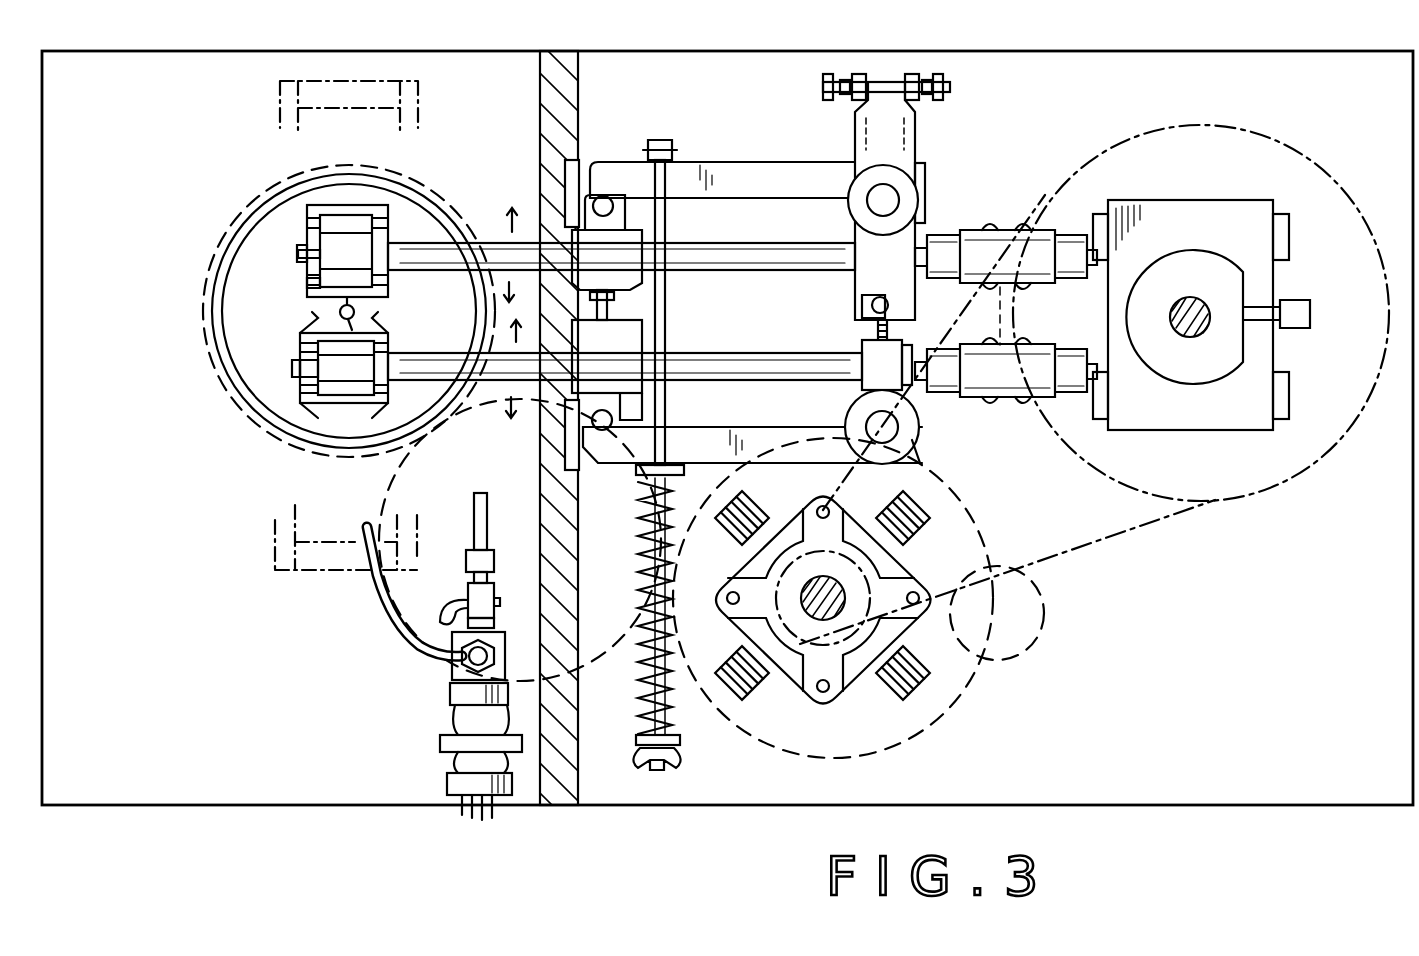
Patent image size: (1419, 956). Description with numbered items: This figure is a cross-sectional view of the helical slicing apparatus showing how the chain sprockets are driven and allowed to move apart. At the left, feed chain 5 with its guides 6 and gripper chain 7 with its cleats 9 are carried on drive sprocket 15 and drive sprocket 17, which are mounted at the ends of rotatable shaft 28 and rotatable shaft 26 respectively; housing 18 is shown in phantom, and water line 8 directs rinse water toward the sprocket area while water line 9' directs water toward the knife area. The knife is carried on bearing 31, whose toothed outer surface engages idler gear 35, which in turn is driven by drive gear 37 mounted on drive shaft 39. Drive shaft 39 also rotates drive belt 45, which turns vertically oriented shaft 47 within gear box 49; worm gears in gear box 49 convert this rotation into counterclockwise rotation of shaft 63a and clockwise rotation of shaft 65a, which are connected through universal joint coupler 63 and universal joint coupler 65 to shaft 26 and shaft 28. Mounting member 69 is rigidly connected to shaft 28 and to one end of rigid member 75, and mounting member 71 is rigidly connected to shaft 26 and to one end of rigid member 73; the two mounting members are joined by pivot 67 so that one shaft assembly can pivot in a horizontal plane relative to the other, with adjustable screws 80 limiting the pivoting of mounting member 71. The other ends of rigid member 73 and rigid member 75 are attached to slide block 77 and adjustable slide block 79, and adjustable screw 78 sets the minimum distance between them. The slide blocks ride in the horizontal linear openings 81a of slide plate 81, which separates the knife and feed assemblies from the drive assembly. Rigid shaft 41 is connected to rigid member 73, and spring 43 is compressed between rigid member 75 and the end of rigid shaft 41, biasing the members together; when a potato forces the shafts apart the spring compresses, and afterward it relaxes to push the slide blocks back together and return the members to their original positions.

The feed chain 5 is at (300, 343).
The guides 6 is at (382, 324).
The gripper chain 7 is at (305, 284).
The water line 8 is at (382, 605).
The cleats 9 is at (340, 222).
The water line 9' is at (481, 656).
The drive sprocket 15 is at (300, 378).
The drive sprocket 17 is at (305, 262).
The housing 18 is at (280, 116).
The rotatable shaft 26 is at (486, 242).
The rotatable shaft 28 is at (490, 382).
The bearing 31 is at (240, 400).
The idler gear 35 is at (376, 488).
The drive gear 37 is at (963, 690).
The drive shaft 39 is at (900, 560).
The rigid shaft 41 is at (660, 221).
The spring 43 is at (650, 545).
The drive belt 45 is at (1097, 535).
The vertically oriented shaft 47 is at (1195, 298).
The gear box 49 is at (1188, 430).
The universal joint coupler 63 is at (1003, 228).
The shaft 63a is at (1093, 240).
The universal joint coupler 65 is at (968, 400).
The shaft 65a is at (1091, 410).
The pivot 67 is at (860, 310).
The mounting member 69 is at (862, 407).
The mounting member 71 is at (858, 238).
The rigid member 73 is at (732, 162).
The rigid member 75 is at (693, 432).
The slide block 77 is at (612, 200).
The adjustable screw 78 is at (610, 305).
The adjustable slide block 79 is at (592, 430).
The adjustable screws 80 is at (905, 82).
The slide plate 81 is at (578, 84).
The linear openings 81a is at (565, 158).